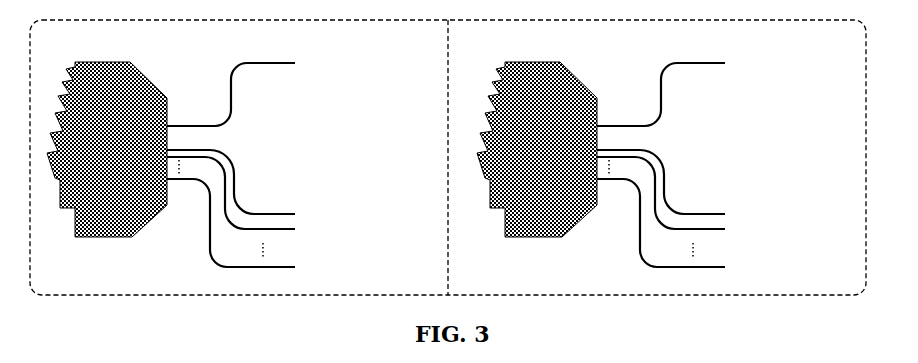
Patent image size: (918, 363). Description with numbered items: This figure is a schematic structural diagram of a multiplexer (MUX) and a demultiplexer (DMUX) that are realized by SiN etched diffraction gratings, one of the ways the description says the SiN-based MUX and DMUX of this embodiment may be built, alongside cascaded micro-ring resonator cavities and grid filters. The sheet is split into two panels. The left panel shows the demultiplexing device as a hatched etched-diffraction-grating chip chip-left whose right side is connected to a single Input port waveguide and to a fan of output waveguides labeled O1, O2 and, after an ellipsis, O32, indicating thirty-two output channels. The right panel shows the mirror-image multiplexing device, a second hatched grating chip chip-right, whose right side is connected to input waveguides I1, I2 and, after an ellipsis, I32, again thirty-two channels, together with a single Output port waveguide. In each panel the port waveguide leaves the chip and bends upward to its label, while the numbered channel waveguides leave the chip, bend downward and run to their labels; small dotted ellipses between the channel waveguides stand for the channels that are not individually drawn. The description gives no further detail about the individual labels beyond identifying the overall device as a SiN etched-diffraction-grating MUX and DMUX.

The input port waveguide Input port is at (286, 89).
The output waveguide 1 O1 is at (254, 183).
The output waveguide 2 O2 is at (254, 200).
The output waveguide 32 O32 is at (259, 228).
The output port waveguide Output port is at (724, 89).
The input waveguide 1 I1 is at (679, 183).
The input waveguide 2 I2 is at (679, 200).
The input waveguide 32 I32 is at (685, 228).
The optical switch chip (input side) chip-left is at (107, 149).
The optical switch chip (output side) chip-right is at (537, 149).